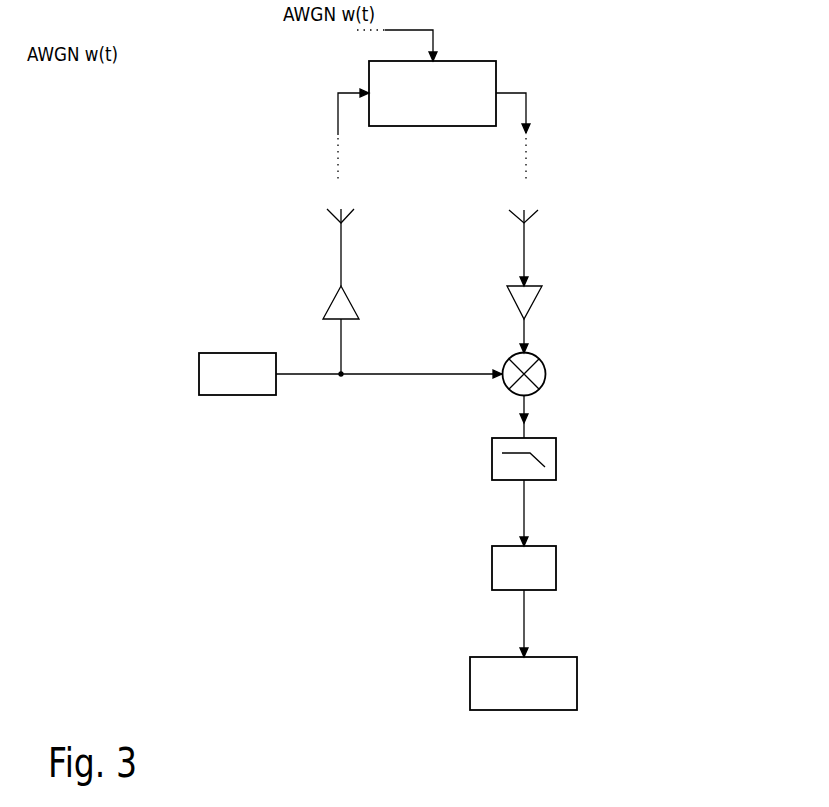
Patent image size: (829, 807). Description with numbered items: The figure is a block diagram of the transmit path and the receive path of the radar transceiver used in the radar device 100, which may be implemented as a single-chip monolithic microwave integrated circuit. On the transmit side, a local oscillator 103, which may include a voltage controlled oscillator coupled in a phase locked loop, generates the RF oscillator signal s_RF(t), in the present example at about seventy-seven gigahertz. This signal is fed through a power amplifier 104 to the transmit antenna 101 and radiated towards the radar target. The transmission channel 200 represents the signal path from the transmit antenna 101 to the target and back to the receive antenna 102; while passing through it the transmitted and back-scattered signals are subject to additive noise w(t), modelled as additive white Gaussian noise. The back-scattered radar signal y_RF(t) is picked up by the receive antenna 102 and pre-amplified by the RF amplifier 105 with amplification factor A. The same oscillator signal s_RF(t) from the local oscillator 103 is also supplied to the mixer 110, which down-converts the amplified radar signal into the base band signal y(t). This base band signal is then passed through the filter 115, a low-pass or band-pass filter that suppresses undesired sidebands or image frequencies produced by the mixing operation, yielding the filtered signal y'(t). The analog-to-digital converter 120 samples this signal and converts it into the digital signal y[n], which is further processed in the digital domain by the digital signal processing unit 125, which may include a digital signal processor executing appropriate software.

The radar device 100 is at (348, 500).
The transmit antenna 101 is at (338, 227).
The receive antenna 102 is at (527, 227).
The local oscillator 103 is at (238, 323).
The power amplifier 104 is at (330, 302).
The RF amplifier 105 is at (533, 305).
The mixer 110 is at (545, 368).
The filter 115 is at (556, 453).
The analog-to-digital converter 120 is at (556, 568).
The digital signal processing unit 125 is at (577, 683).
The transmission channel 200 is at (497, 68).